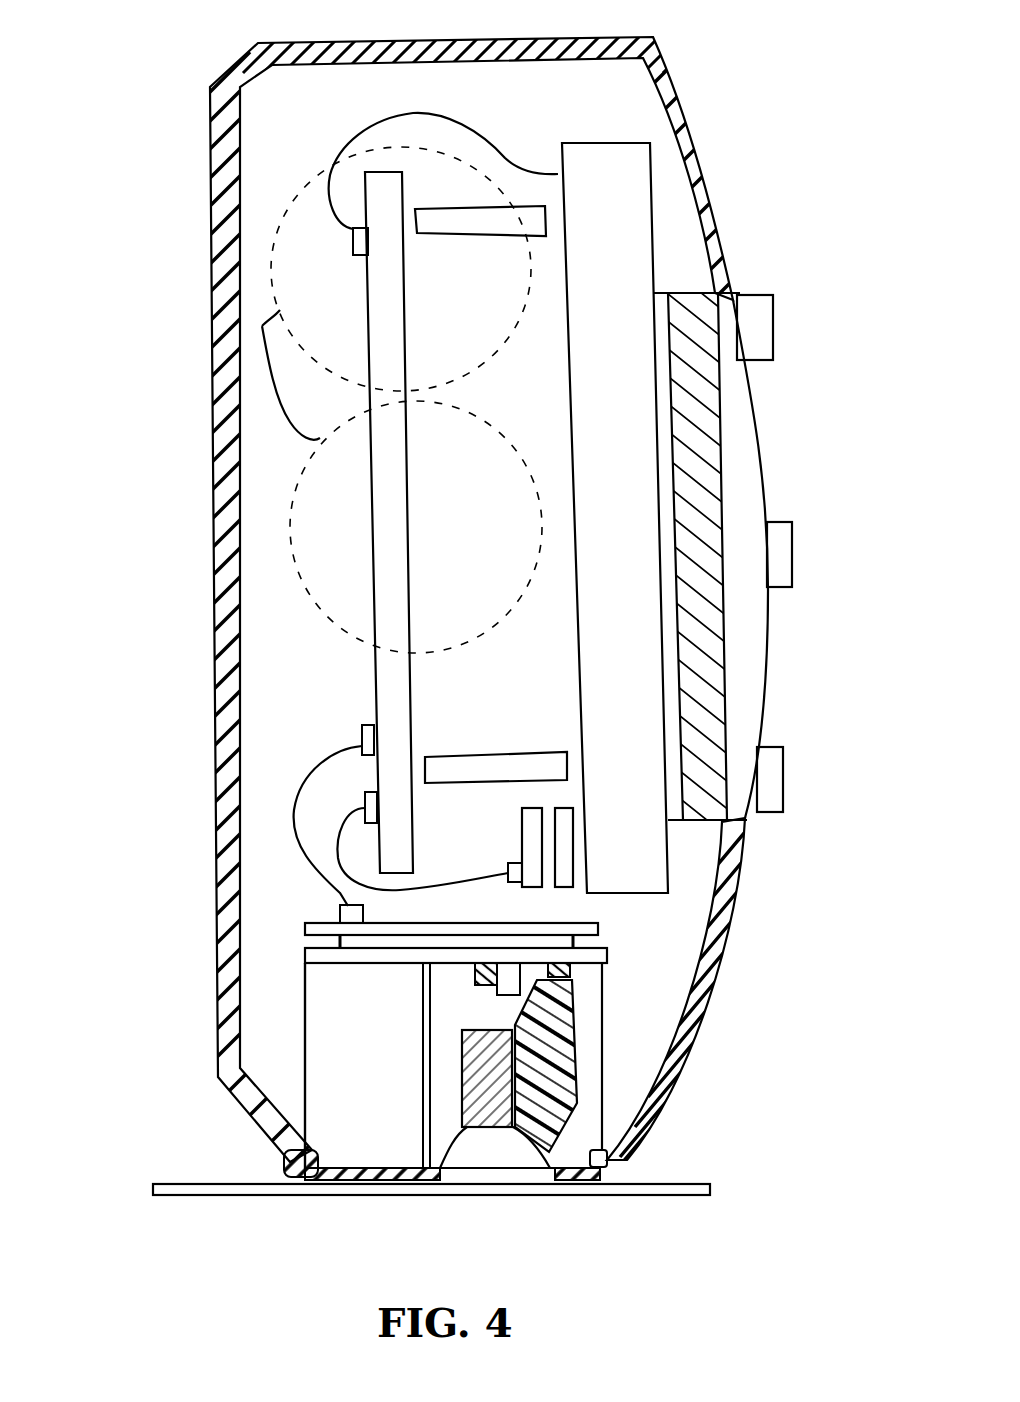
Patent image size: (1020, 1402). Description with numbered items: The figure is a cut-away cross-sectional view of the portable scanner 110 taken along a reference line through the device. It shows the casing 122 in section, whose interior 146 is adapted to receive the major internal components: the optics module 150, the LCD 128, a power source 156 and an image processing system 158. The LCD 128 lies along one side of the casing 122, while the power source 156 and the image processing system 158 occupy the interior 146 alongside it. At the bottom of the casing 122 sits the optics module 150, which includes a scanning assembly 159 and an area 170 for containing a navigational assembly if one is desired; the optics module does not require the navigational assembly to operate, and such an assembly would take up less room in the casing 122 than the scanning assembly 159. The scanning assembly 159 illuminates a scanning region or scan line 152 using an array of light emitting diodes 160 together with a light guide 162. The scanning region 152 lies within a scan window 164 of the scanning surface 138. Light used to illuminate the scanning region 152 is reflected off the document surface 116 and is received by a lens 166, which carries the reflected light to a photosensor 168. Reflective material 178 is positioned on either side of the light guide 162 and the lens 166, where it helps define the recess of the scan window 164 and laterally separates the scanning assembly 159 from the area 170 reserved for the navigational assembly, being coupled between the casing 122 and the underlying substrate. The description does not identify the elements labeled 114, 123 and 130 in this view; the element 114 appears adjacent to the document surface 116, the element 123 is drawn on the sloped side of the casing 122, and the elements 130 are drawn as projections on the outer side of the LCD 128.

The portable scanner 110 is at (152, 65).
The platen surface 114 is at (171, 1200).
The document surface 116 is at (700, 1184).
The casing 122 is at (620, 38).
The housing side wall 123 is at (686, 110).
The LCD 128 is at (725, 642).
The buttons 130 is at (775, 324).
The scanning surface 138 is at (395, 1190).
The interior 146 is at (318, 138).
The optics module 150 is at (286, 962).
The scanning region 152 is at (515, 1197).
The power source 156 is at (262, 326).
The image processing system 158 is at (412, 498).
The scanning assembly 159 is at (480, 1026).
The array of light emitting diodes 160 is at (568, 970).
The light guide 162 is at (568, 1027).
The scan window 164 is at (550, 1180).
The lens 166 is at (460, 1076).
The photosensor 168 is at (477, 973).
The area 170 is at (395, 1028).
The reflective material 178 is at (440, 1138).